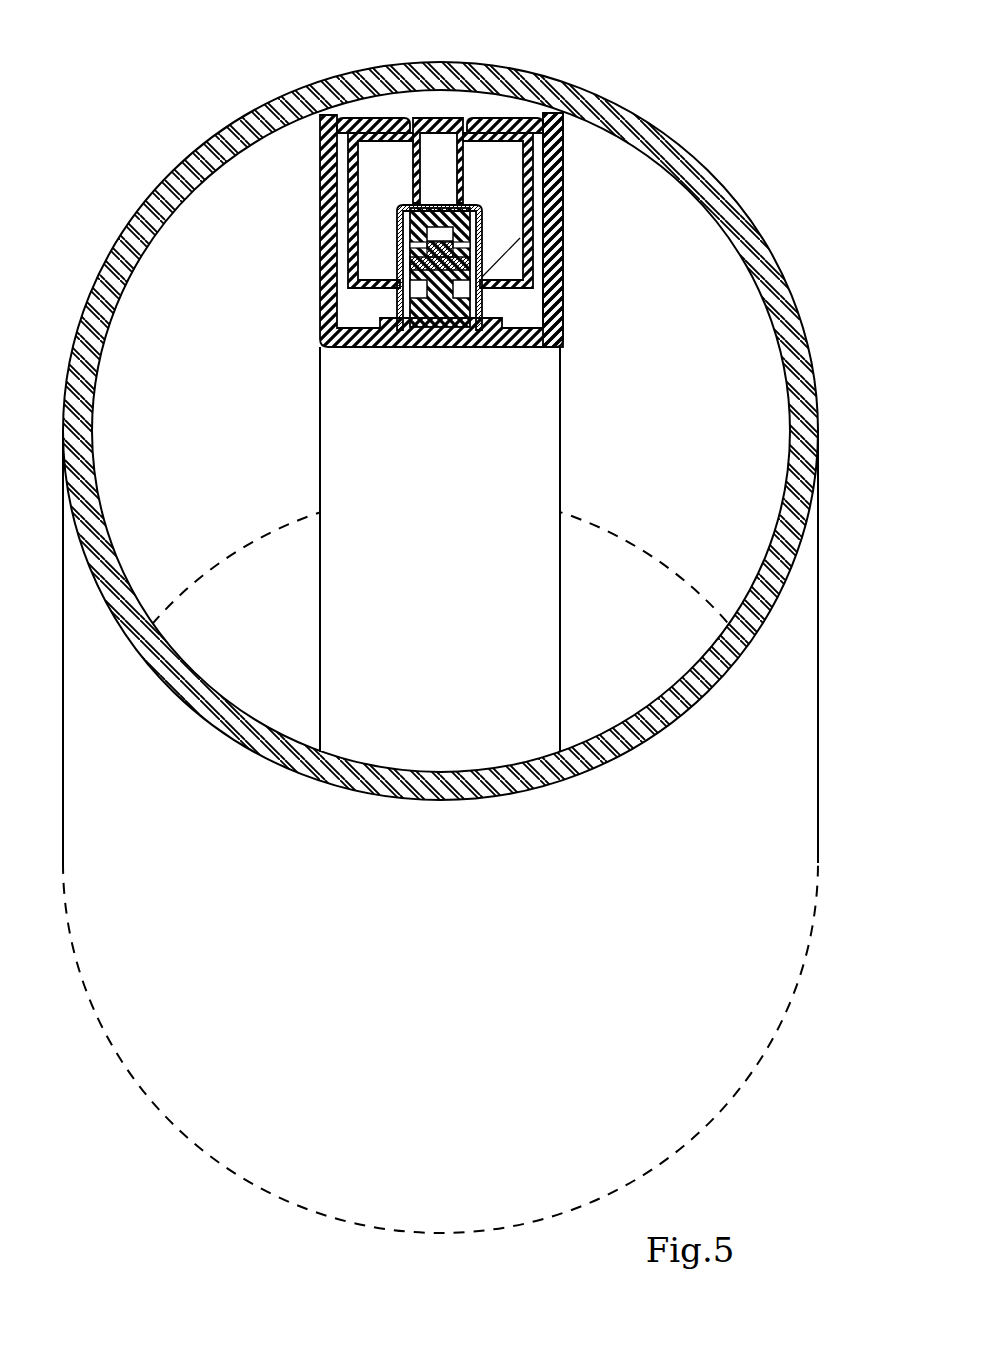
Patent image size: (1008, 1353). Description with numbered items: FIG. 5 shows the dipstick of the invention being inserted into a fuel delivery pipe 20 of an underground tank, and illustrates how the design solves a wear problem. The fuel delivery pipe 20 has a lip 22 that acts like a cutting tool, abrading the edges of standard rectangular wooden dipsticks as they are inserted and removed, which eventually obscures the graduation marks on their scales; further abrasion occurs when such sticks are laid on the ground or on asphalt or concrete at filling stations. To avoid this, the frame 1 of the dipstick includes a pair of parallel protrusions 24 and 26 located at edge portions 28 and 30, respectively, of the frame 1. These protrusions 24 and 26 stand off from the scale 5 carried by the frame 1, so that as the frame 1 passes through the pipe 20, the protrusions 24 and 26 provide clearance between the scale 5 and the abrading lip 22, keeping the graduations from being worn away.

The frame 1 is at (562, 225).
The scale 5 is at (383, 119).
The fuel delivery pipe 20 is at (818, 718).
The lip 22 is at (457, 91).
The protrusion 24 is at (330, 115).
The protrusion 26 is at (550, 127).
The edge portion 28 is at (319, 117).
The edge portion 30 is at (560, 113).